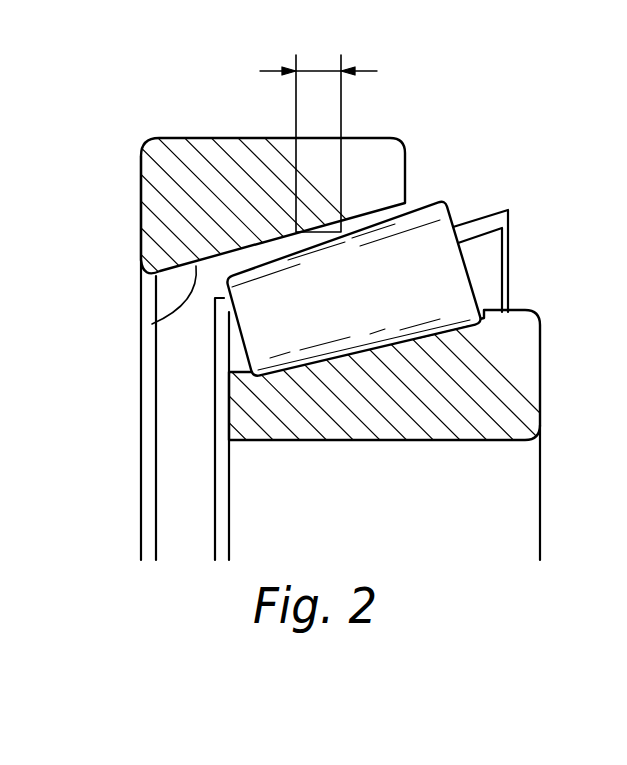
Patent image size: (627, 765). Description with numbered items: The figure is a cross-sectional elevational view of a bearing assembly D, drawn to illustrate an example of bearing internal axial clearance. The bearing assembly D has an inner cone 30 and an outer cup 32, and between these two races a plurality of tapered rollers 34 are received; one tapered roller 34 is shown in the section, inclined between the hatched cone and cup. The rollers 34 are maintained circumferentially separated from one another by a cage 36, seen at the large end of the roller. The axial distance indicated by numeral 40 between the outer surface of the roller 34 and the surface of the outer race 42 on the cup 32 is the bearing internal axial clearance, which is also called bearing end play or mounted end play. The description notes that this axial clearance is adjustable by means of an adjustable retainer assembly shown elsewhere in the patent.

The inner cone 30 is at (412, 440).
The outer cup 32 is at (141, 210).
The tapered rollers 34 is at (413, 255).
The cage 36 is at (485, 212).
The axial distance 40 is at (320, 70).
The outer race 42 is at (152, 324).
The bearing assembly D is at (171, 108).